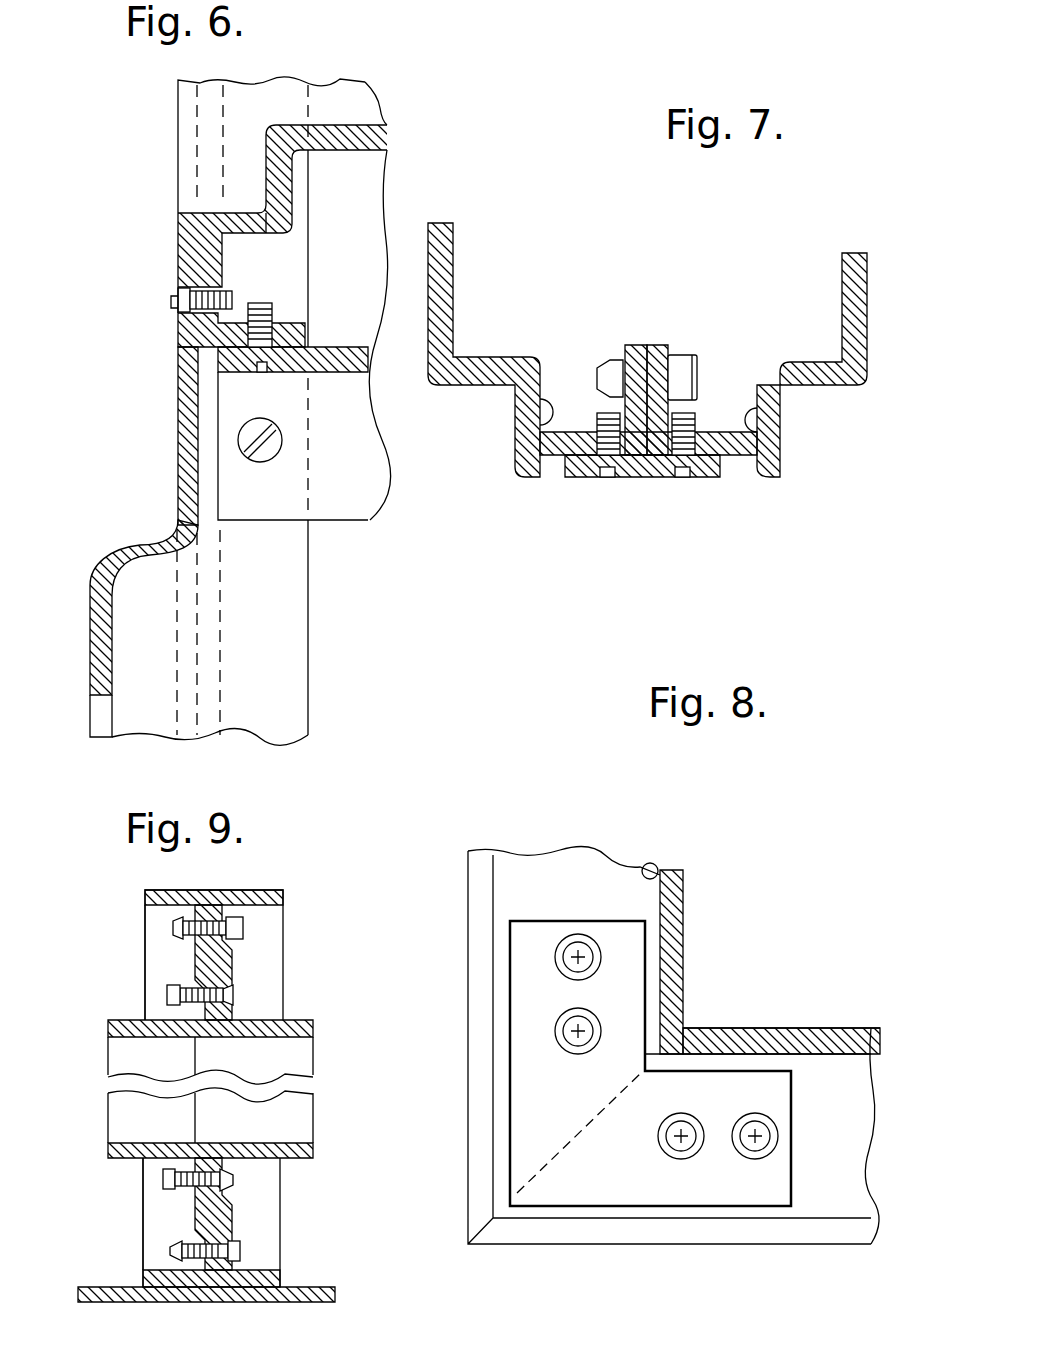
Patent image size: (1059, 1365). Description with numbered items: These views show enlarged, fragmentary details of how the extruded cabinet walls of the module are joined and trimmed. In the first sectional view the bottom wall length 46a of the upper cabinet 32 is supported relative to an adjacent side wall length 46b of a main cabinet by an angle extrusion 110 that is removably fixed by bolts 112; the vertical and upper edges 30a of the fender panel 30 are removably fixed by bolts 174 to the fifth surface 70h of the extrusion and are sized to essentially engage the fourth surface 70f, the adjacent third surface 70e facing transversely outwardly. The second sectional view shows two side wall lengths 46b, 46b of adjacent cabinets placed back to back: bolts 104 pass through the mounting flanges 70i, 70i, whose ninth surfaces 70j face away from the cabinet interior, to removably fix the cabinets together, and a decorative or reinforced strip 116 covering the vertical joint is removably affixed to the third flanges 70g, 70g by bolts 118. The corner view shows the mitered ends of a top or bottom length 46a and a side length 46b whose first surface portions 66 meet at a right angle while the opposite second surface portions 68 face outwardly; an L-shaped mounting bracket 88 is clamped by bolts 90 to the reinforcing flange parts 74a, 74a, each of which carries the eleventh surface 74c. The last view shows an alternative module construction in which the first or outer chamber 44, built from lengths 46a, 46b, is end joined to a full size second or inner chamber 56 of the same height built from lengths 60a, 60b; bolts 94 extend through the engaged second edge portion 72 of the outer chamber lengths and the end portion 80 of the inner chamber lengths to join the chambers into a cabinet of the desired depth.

In FIG. 6, the upper cabinet 32 is at (166, 105).
In FIG. 6, the first pair of like size lengths 46a is at (341, 123).
In FIG. 8, the first pair of like size lengths 46a is at (833, 1020).
In FIG. 9, the first pair of like size lengths 46a is at (127, 974).
In FIG. 6, the second pair of like size lengths 46b is at (310, 607).
In FIG. 7, the second pair of like size lengths 46b is at (457, 240).
In FIG. 8, the second pair of like size lengths 46b is at (604, 855).
In FIG. 9, the second pair of like size lengths 46b is at (107, 1105).
In FIG. 6, the third surface 70e is at (178, 225).
In FIG. 7, the third surface 70e is at (532, 475).
In FIG. 6, the fourth surface 70f is at (178, 278).
In FIG. 7, the fourth surface 70f is at (577, 466).
In FIG. 6, the third part or flange 70g is at (222, 265).
In FIG. 7, the third part or flange 70g is at (530, 405).
In FIG. 6, the fifth surface 70h is at (178, 338).
In FIG. 7, the fifth surface 70h is at (590, 470).
In FIG. 7, the seventh part or mounting flange 70i is at (635, 347).
In FIG. 6, the ninth surface 70j is at (328, 345).
In FIG. 6, the bolts 174 is at (178, 320).
In FIG. 6, the bolts 112 is at (275, 372).
In FIG. 6, the angle extrusion 110 is at (350, 490).
In FIG. 6, the edges of fender panel 30a is at (178, 437).
In FIG. 6, the fender panel 30 is at (110, 538).
In FIG. 7, the bolts 104 is at (684, 365).
In FIG. 7, the decorative and/or reinforced strips 116 is at (637, 460).
In FIG. 7, the bolts 118 is at (607, 460).
In FIG. 8, the ninth part or flange 74a is at (555, 897).
In FIG. 8, the eleventh surface 74c is at (468, 860).
In FIG. 8, the second surface portion 68 is at (656, 870).
In FIG. 8, the first surface portion 66 is at (686, 890).
In FIG. 8, the L-shaped mounting bracket 88 is at (561, 1097).
In FIG. 8, the bolts 90 is at (578, 1010).
In FIG. 9, the second or inner edge portion 72 is at (167, 889).
In FIG. 9, the end portion of second chamber extrusion 80 is at (259, 886).
In FIG. 9, the first pair of like size lengths 60a is at (288, 919).
In FIG. 9, the bolts 94 is at (243, 990).
In FIG. 9, the full size second or inner chamber 56 is at (282, 1054).
In FIG. 9, the second pair of like size lengths 60b is at (314, 1106).
In FIG. 9, the first or outer chamber 44 is at (154, 1109).